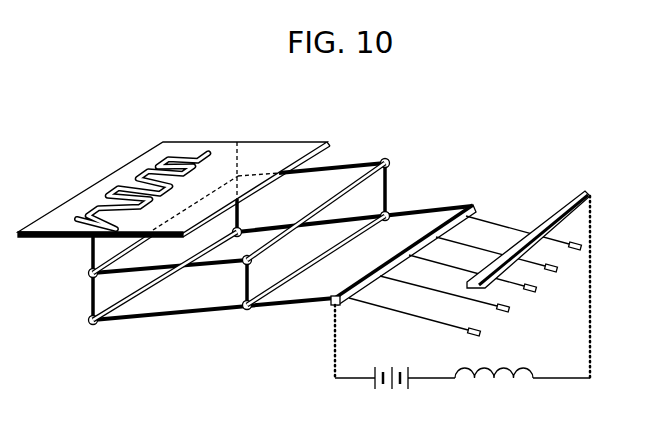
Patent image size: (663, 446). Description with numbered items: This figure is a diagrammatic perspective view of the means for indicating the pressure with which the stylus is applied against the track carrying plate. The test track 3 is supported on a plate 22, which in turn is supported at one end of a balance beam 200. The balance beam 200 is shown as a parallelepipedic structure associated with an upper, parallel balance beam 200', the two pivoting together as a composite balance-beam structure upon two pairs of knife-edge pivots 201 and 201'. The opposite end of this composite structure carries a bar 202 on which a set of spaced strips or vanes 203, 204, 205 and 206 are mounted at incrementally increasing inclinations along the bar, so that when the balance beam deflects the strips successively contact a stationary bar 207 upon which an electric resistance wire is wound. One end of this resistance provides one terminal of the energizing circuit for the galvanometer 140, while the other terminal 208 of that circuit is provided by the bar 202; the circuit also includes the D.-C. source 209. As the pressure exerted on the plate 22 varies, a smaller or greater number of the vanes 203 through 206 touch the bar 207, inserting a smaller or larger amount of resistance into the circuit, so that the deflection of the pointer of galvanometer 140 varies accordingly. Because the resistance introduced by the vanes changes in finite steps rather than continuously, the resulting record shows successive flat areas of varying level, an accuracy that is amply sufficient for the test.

The test track 3 is at (173, 159).
The plate 22 is at (111, 177).
The galvanometer 140 is at (503, 380).
The balance beam 200 is at (212, 292).
The upper parallel balance beam 200' is at (353, 176).
The knife-edge pivots 201 is at (239, 285).
The knife-edge pivots 201' is at (239, 266).
The bar 202 is at (377, 268).
The strip or vane 203 is at (481, 334).
The strip or vane 204 is at (509, 309).
The strip or vane 205 is at (553, 271).
The strip or vane 206 is at (581, 247).
The stationary bar 207 is at (577, 199).
The terminal 208 is at (334, 306).
The D.-C. source 209 is at (375, 390).